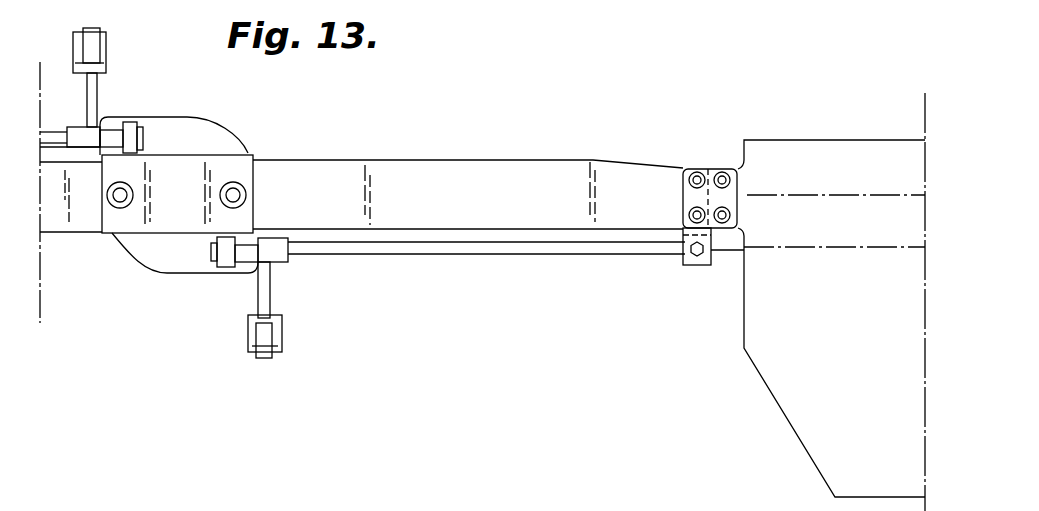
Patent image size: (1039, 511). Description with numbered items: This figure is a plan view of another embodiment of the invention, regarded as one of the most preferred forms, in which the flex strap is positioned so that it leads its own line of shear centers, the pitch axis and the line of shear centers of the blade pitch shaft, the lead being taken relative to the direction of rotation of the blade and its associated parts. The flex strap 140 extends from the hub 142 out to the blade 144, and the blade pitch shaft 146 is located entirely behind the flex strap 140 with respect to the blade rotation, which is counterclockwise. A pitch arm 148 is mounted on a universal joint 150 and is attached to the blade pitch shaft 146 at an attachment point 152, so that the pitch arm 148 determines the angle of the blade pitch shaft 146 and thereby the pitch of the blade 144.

The flex strap 140 is at (423, 168).
The hub 142 is at (191, 117).
The blade 144 is at (793, 145).
The blade pitch shaft 146 is at (492, 254).
The pitch arm 148 is at (257, 298).
The universal joint 150 is at (268, 360).
The attachment point 152 is at (282, 263).